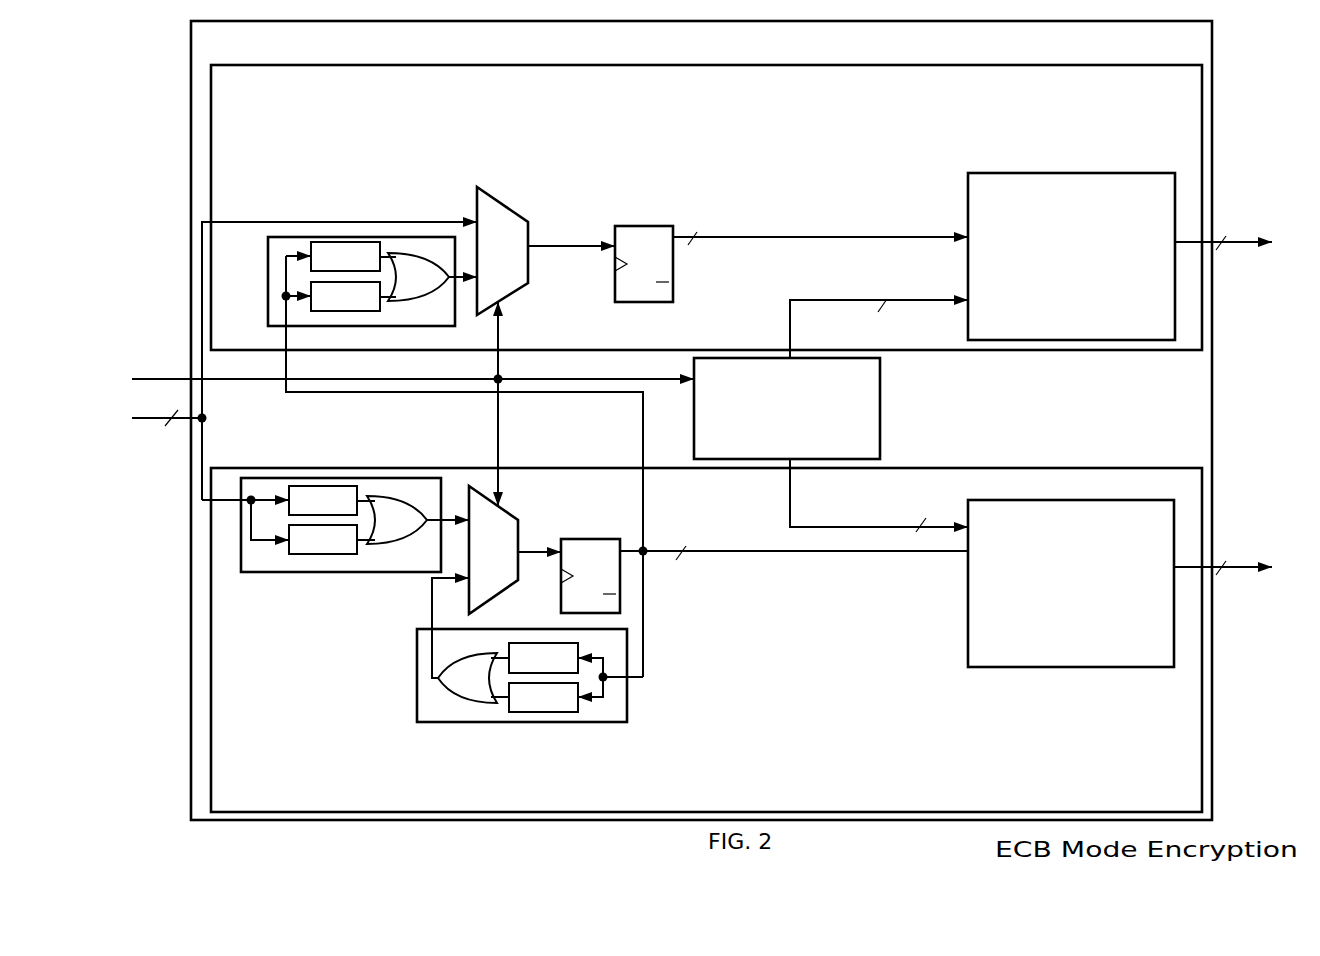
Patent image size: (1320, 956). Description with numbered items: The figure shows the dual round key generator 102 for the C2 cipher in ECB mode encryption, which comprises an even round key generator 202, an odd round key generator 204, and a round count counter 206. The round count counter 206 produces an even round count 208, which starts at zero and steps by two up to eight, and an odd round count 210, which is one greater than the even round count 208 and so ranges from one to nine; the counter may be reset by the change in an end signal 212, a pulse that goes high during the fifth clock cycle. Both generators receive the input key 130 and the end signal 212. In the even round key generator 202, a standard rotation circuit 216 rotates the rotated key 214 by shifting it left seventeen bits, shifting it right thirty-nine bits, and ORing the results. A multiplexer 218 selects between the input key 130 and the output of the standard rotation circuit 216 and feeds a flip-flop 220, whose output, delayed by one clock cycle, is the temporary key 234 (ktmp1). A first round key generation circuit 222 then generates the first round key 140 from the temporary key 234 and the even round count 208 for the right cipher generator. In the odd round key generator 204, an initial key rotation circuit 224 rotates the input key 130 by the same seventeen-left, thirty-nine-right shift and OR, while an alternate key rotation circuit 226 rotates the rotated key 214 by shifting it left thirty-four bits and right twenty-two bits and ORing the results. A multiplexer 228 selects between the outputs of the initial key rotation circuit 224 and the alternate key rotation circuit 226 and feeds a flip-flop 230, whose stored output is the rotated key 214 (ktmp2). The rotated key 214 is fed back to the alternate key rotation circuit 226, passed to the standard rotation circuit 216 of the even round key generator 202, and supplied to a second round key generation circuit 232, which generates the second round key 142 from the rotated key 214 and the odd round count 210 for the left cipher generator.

The dual round key generator 102 is at (701, 420).
The even round key generator 202 is at (706, 207).
The odd round key generator 204 is at (706, 640).
The round count counter 206 is at (792, 408).
The even round count 208 is at (790, 310).
The odd round count 210 is at (790, 492).
The end signal 212 is at (262, 379).
The rotated key 214 is at (757, 553).
The standard rotation circuit 216 is at (345, 237).
The multiplexer 218 is at (505, 206).
The flip-flop 220 is at (630, 226).
The first round key generation circuit 222 is at (1071, 256).
The initial key rotation circuit 224 is at (270, 572).
The alternate key rotation circuit 226 is at (627, 717).
The multiplexer 228 is at (512, 516).
The flip-flop 230 is at (572, 539).
The second round key generation circuit 232 is at (1071, 583).
The temporary key 234 is at (763, 237).
The input key 130 is at (202, 455).
The first round key 140 is at (1233, 181).
The second round key 142 is at (1239, 629).